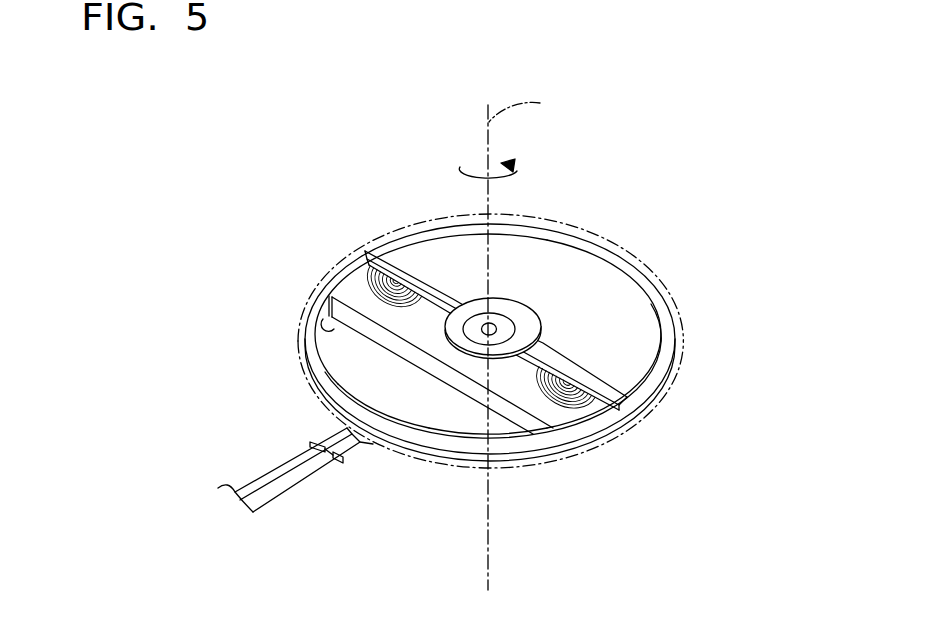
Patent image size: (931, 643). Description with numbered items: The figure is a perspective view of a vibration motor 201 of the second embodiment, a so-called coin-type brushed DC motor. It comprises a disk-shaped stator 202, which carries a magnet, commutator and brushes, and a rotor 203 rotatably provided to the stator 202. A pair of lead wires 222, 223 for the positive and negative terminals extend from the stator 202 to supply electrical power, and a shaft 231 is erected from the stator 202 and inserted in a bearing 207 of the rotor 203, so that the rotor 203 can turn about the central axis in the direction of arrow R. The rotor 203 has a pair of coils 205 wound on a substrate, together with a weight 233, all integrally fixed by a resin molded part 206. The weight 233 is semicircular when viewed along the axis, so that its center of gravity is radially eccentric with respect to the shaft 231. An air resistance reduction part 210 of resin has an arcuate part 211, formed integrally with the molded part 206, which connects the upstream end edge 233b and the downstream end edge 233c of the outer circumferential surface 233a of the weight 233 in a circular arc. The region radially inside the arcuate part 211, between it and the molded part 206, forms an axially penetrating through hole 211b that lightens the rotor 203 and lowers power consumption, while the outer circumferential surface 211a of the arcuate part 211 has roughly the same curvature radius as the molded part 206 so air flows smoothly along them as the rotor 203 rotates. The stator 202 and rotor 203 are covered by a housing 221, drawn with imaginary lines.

The vibration motor 201 is at (355, 148).
The stator 202 is at (512, 476).
The rotor 203 is at (638, 250).
The coil 205 is at (370, 278).
The molded part 206 is at (654, 363).
The bearing 207 is at (464, 330).
The air resistance reduction part 210 is at (440, 462).
The arcuate part 211 is at (397, 440).
The outer circumferential surface of the arcuate part 211a is at (330, 402).
The through hole 211b is at (326, 315).
The housing 221 is at (677, 289).
The lead wire 222 is at (271, 469).
The lead wire 223 is at (296, 481).
The shaft 231 is at (491, 336).
The weight 233 is at (562, 255).
The outer circumferential surface of the weight 233a is at (637, 287).
The upstream end edge 233b is at (369, 251).
The downstream end edge 233c is at (622, 400).